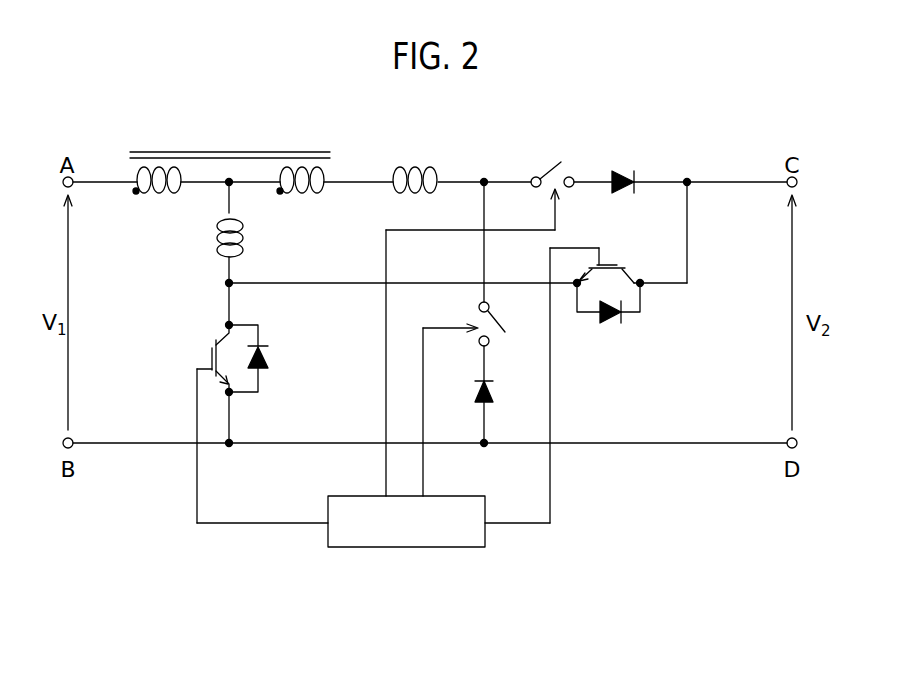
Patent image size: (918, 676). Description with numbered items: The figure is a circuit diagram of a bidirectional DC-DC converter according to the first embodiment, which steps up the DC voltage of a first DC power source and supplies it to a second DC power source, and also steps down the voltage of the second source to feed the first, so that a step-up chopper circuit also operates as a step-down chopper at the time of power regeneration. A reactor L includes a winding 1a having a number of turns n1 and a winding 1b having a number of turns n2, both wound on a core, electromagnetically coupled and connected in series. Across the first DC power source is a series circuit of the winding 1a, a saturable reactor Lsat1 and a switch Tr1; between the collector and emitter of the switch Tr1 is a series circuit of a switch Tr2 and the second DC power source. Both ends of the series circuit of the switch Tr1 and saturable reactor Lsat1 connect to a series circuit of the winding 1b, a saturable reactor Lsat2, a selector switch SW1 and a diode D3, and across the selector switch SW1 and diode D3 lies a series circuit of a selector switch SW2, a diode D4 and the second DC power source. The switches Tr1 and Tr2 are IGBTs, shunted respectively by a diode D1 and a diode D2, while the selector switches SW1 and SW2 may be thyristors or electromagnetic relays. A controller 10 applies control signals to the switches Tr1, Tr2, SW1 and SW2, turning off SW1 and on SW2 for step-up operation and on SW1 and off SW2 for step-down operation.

The winding 1a is at (160, 212).
The winding 1b is at (307, 212).
The controller 10 is at (413, 548).
The reactor L is at (216, 155).
The number of turns n1 is at (152, 199).
The number of turns n2 is at (293, 199).
The saturable reactor Lsat1 is at (210, 212).
The saturable reactor Lsat2 is at (443, 152).
The selector switch SW1 is at (512, 323).
The selector switch SW2 is at (562, 160).
The diode D1 is at (266, 358).
The diode D2 is at (608, 319).
The diode D3 is at (470, 394).
The diode D4 is at (623, 169).
The switch Tr1 is at (193, 358).
The switch Tr2 is at (606, 259).